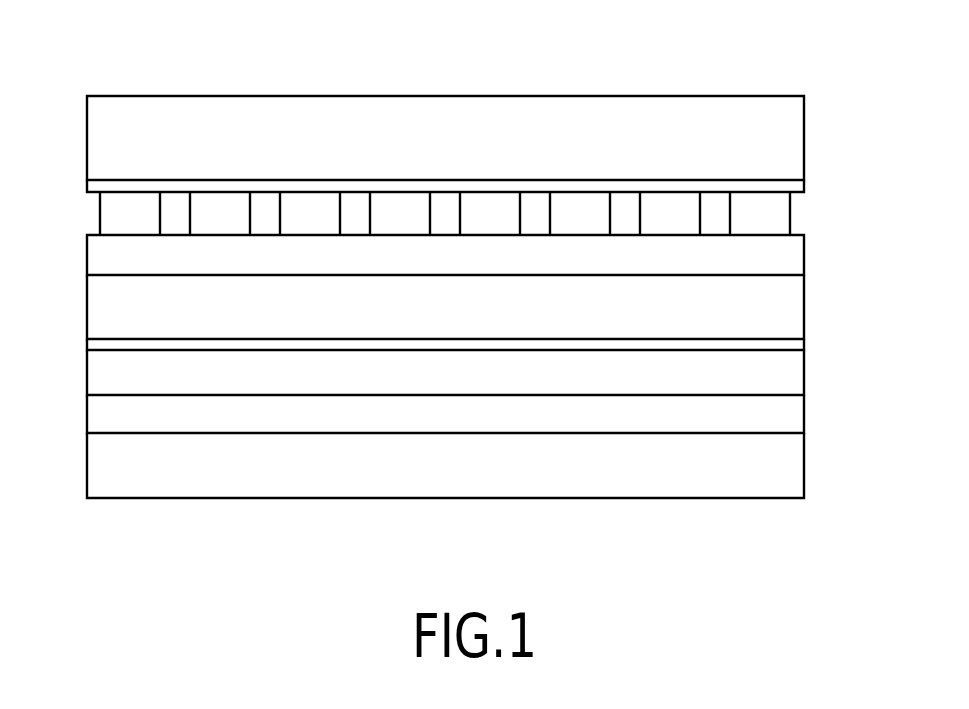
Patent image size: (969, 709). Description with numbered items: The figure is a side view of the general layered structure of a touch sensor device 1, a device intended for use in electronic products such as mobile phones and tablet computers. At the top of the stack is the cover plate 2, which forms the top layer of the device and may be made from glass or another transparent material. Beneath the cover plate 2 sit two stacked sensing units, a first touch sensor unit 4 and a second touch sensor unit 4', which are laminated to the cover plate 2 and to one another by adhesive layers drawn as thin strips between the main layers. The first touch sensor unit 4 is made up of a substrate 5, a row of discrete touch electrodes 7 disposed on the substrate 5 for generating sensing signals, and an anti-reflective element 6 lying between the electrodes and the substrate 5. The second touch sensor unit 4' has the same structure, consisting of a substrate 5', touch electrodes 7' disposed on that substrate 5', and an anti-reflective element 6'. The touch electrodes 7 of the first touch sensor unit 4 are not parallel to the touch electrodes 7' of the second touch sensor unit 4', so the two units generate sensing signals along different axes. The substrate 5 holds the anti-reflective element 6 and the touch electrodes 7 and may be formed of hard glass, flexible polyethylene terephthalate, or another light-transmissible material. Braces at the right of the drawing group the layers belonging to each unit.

The touch sensor device 1 is at (62, 40).
The cover plate 2 is at (793, 125).
The first touch sensor unit 4 is at (885, 255).
The substrate 5 is at (474, 307).
The anti-reflective element 6 is at (474, 256).
The touch electrodes 7 is at (481, 214).
The second touch sensor unit 4' is at (889, 415).
The substrate 5' is at (479, 465).
The anti-reflective element 6' is at (479, 414).
The touch electrodes 7' is at (479, 372).